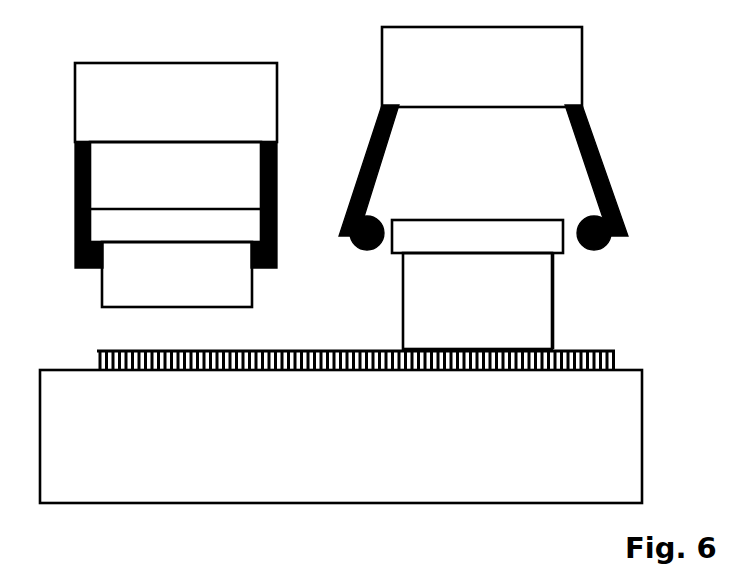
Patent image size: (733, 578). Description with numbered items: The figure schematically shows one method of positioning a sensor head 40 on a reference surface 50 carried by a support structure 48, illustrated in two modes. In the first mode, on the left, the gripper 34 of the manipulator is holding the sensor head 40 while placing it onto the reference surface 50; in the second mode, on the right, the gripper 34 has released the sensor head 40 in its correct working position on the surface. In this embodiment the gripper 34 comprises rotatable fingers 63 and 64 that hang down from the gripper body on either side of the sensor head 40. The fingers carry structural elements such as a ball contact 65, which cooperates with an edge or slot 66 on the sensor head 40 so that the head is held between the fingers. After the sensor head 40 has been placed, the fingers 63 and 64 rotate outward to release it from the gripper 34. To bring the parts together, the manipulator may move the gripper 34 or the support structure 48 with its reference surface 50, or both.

The gripper 34 is at (91, 101).
The rotatable finger 63 is at (73, 182).
The rotatable finger 64 is at (259, 178).
The ball contact 65 is at (592, 218).
The edge or slot 66 is at (560, 256).
The sensor head 40 is at (117, 288).
The support structure 48 is at (57, 420).
The reference surface 50 is at (100, 351).